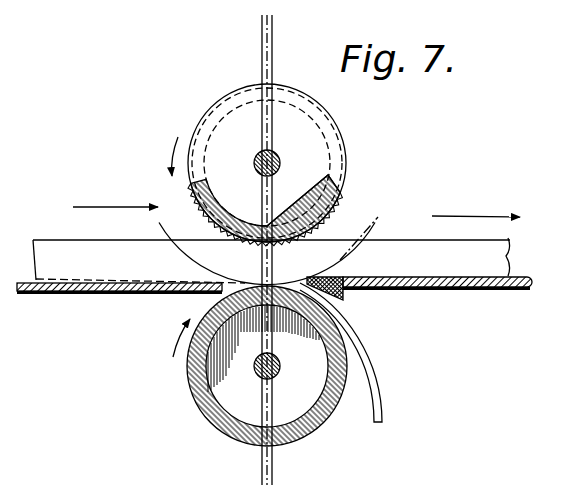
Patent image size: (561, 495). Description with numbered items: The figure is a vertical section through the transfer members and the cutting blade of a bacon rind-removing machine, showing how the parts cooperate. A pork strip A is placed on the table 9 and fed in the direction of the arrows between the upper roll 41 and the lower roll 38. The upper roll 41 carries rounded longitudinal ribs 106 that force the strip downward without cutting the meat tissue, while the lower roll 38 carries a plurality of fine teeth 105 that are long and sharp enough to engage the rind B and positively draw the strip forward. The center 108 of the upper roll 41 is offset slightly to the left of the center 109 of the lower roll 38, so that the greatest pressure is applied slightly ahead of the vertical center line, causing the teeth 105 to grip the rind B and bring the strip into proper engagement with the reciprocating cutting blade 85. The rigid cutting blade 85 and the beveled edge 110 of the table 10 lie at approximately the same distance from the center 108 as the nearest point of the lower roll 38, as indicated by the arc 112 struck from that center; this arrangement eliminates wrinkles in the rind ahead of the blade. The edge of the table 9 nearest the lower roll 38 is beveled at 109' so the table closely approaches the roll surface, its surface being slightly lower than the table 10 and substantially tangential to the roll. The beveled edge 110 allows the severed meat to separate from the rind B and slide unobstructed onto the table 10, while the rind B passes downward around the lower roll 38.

The longitudinal ribs 106 is at (200, 205).
The center of the upper roll 108 is at (254, 158).
The upper roll 41 is at (334, 190).
The pork strip A is at (95, 250).
The arc 112 is at (376, 224).
The beveled edge of the table 109' is at (140, 269).
The table 9 is at (67, 292).
The table 10 is at (490, 288).
The beveled edge 110 is at (370, 286).
The cutting blade 85 is at (340, 289).
The teeth 105 is at (195, 396).
The lower roll 38 is at (320, 413).
The center of the lower roll 109 is at (288, 376).
The rind B is at (378, 385).